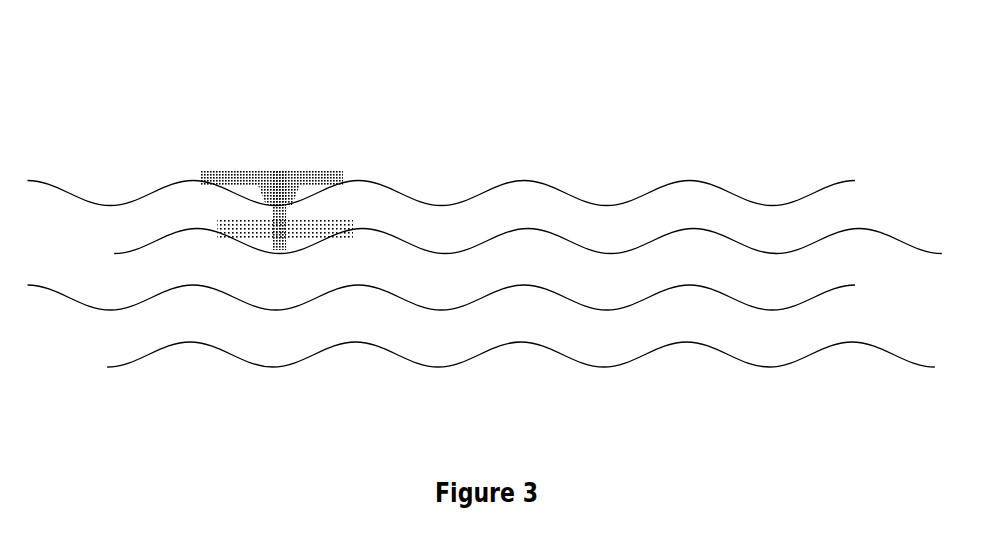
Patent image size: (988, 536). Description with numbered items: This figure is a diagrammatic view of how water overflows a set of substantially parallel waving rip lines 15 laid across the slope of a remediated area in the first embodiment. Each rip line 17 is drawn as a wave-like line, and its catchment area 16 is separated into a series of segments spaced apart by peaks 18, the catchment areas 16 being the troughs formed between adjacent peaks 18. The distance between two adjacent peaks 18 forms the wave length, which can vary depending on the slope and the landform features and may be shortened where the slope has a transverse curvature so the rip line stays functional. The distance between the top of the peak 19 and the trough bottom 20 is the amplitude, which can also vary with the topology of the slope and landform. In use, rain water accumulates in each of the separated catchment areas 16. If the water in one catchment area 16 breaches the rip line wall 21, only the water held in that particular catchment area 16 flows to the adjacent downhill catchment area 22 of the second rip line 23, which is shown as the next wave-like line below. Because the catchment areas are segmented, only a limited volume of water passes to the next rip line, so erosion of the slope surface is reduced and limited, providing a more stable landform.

The waving rip lines 15 is at (806, 107).
The catchment area 16 is at (280, 180).
The rip line 17 is at (438, 203).
The peaks 18 is at (528, 180).
The top of the peak 19 is at (173, 168).
The trough bottom 20 is at (258, 187).
The rip line wall 21 is at (414, 185).
The adjacent downhill catchment area 22 is at (305, 228).
The second rip line 23 is at (376, 232).